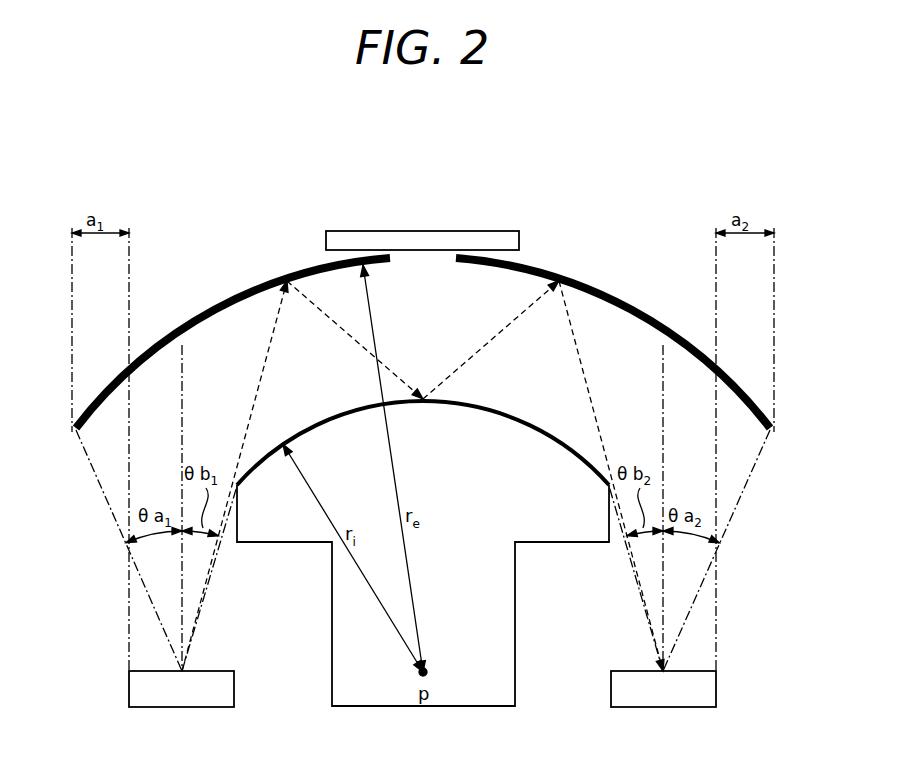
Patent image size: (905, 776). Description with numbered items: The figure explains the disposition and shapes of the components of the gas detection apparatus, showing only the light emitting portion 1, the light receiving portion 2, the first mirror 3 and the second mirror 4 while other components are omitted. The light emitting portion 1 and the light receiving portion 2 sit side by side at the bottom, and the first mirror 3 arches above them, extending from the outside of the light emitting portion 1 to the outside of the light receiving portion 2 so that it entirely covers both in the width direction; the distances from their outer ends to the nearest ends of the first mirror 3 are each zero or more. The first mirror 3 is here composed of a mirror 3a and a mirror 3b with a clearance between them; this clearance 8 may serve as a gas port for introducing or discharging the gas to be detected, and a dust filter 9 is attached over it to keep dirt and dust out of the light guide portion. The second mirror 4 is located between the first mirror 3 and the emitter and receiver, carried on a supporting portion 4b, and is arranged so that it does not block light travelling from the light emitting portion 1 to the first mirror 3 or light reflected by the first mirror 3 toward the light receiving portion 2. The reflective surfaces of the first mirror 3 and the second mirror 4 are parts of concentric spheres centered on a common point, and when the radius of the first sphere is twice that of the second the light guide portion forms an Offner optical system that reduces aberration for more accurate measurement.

The light emitting portion 1 is at (182, 708).
The light receiving portion 2 is at (663, 708).
The first mirror 3 is at (423, 331).
The mirror 3a is at (221, 297).
The mirror 3b is at (600, 296).
The second mirror 4 is at (546, 432).
The supporting portion 4b is at (515, 592).
The gap between mirrors 8 is at (423, 262).
The dust filter 9 is at (423, 231).